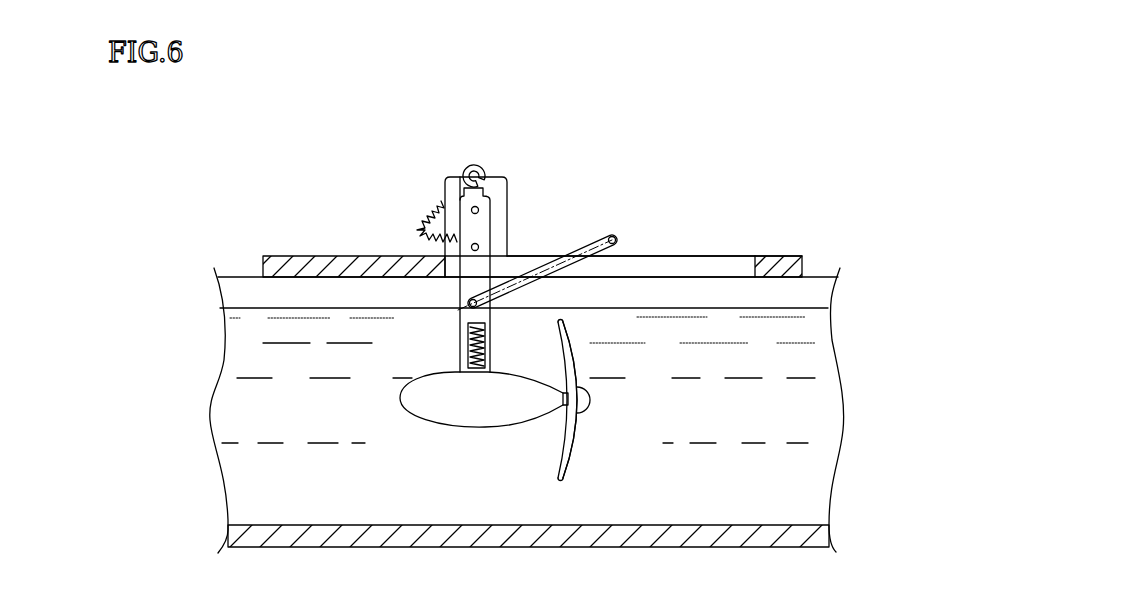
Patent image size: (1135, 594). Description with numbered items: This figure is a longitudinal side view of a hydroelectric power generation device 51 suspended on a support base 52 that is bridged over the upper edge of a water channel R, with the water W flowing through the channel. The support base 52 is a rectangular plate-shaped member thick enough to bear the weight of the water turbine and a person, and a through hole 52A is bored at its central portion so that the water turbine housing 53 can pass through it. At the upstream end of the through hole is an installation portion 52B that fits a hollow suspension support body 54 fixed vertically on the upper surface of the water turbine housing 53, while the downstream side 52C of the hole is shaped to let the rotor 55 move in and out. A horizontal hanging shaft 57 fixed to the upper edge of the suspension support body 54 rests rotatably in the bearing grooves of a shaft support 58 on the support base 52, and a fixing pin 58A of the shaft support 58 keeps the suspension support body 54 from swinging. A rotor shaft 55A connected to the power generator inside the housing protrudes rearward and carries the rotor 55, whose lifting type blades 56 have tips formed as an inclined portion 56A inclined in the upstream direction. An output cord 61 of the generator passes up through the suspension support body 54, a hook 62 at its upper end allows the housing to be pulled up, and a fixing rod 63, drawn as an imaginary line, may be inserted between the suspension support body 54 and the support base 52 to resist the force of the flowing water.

The water channel R is at (231, 273).
The water W is at (256, 306).
The hydroelectric power generation device 51 is at (722, 190).
The support base 52 is at (792, 258).
The through hole 52A is at (690, 262).
The installation portion 52B is at (452, 262).
The downstream side of the through hole 52C is at (755, 268).
The water turbine housing 53 is at (430, 425).
The suspension support body 54 is at (461, 338).
The rotor 55 is at (585, 422).
The rotor shaft 55A is at (565, 391).
The lifting type blade 56 is at (582, 458).
The inclined portion 56A is at (583, 332).
The horizontal hanging shaft 57 is at (478, 210).
The shaft support 58 is at (445, 192).
The fixing pin 58A is at (478, 247).
The output cord 61 is at (424, 220).
The hook 62 is at (468, 160).
The fixing rod 63 is at (599, 229).